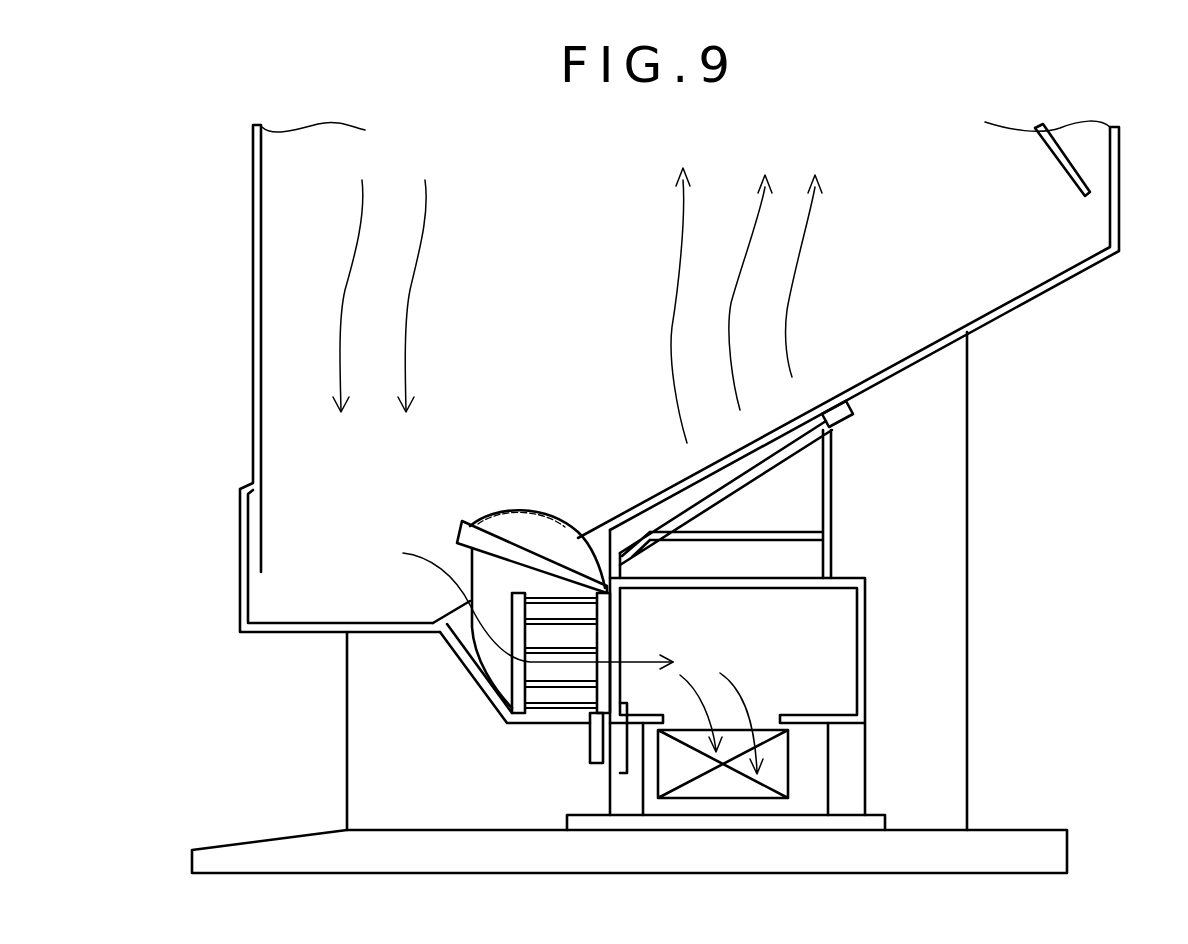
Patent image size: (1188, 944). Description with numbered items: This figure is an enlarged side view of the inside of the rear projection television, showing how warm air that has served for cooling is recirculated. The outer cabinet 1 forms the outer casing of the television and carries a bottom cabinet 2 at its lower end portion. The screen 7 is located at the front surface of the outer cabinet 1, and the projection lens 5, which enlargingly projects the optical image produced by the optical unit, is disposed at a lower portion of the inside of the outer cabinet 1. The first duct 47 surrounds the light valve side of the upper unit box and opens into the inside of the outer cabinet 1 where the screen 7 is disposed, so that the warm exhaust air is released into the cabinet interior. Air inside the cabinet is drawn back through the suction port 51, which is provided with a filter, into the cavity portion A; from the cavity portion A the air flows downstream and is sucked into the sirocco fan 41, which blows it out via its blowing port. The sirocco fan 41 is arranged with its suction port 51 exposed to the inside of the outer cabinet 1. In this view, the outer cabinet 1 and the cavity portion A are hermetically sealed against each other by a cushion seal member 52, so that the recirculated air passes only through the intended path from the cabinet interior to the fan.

The outer cabinet 1 is at (1121, 200).
The bottom cabinet 2 is at (258, 840).
The projection lens 5 is at (523, 518).
The screen 7 is at (253, 294).
The sirocco fan 41 is at (780, 768).
The first duct 47 is at (832, 468).
The suction port 51 is at (516, 670).
The cushion seal member 52 is at (832, 410).
The cavity portion A is at (820, 655).